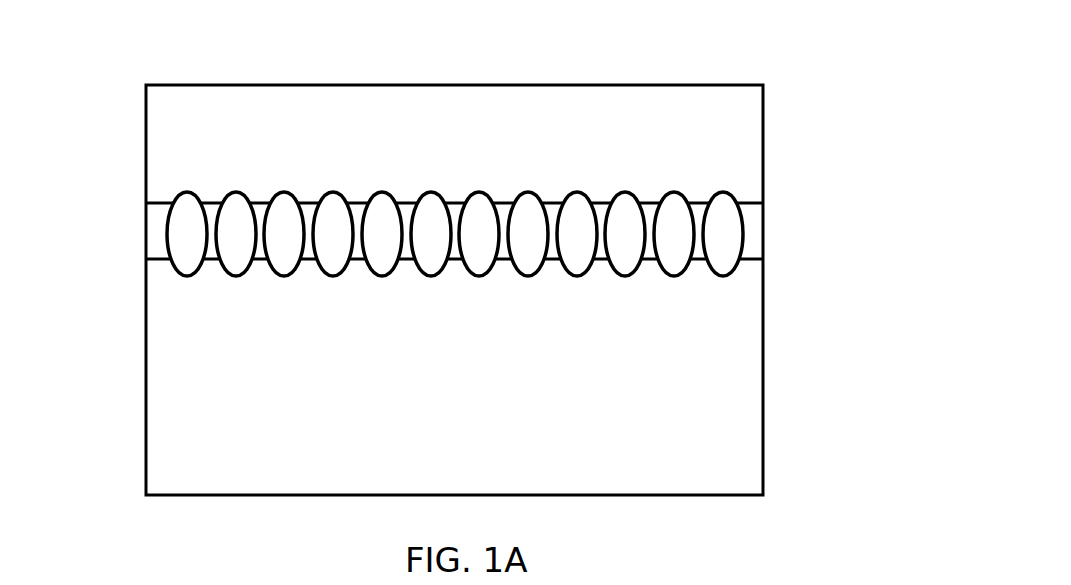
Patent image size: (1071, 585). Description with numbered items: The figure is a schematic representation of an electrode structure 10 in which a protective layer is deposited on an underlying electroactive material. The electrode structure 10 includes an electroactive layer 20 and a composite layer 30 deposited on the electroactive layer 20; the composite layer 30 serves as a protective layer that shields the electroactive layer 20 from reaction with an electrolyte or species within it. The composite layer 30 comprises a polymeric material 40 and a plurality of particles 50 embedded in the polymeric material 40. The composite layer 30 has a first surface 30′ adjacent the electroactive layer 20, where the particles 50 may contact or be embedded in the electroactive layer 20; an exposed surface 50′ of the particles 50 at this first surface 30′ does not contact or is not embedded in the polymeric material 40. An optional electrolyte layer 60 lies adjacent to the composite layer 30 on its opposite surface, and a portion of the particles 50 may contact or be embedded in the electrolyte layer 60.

The electrode structure 10 is at (166, 63).
The electroactive layer 20 is at (472, 395).
The composite layer 30 is at (873, 202).
The first surface 30′ is at (695, 260).
The polymeric material 40 is at (153, 237).
The particles 50 is at (730, 243).
The exposed surface 50′ is at (730, 277).
The electrolyte layer 60 is at (472, 162).